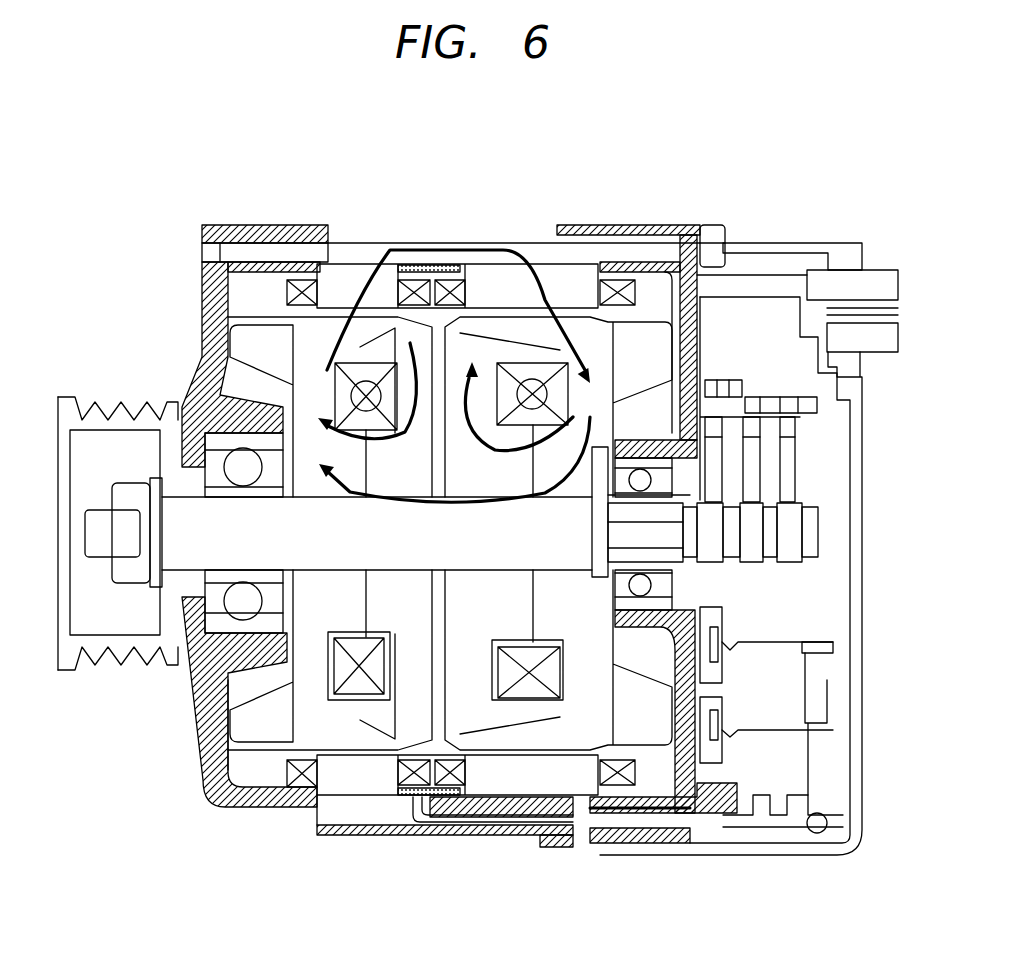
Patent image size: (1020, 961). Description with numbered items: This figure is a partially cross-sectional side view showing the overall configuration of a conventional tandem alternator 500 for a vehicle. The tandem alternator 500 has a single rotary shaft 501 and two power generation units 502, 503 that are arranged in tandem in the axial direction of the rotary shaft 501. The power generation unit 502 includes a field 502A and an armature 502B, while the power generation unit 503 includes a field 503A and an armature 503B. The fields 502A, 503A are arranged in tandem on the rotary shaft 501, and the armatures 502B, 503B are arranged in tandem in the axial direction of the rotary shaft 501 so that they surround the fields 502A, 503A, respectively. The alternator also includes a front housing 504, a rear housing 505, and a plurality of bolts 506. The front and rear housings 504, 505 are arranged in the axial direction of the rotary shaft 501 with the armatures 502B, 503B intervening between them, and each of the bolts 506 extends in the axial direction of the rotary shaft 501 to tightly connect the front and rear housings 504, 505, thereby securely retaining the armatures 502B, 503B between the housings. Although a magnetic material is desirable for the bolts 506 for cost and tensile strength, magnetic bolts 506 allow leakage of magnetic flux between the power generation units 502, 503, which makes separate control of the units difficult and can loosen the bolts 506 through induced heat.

The tandem alternator 500 is at (172, 181).
The rotary shaft 501 is at (190, 545).
The power generation unit 502 is at (207, 788).
The field 502A is at (203, 740).
The armature 502B is at (308, 782).
The power generation unit 503 is at (662, 778).
The field 503A is at (698, 757).
The armature 503B is at (615, 780).
The front housing 504 is at (220, 310).
The rear housing 505 is at (685, 235).
The bolts 506 is at (352, 262).